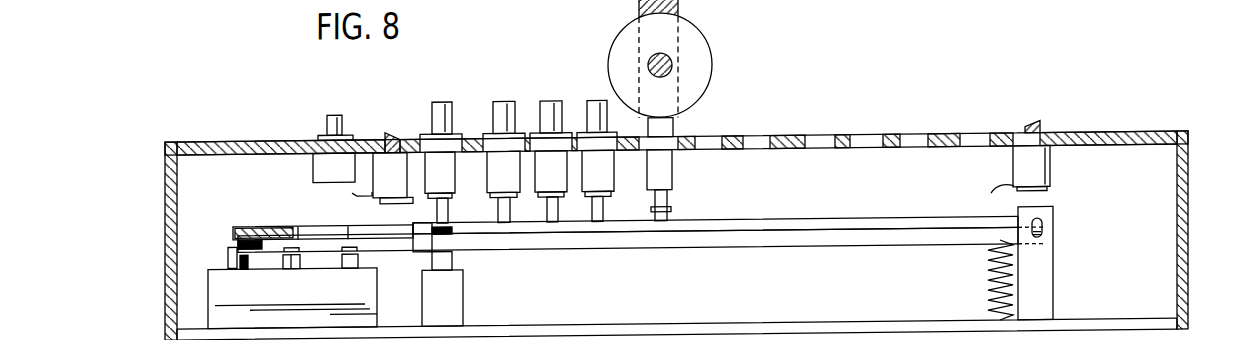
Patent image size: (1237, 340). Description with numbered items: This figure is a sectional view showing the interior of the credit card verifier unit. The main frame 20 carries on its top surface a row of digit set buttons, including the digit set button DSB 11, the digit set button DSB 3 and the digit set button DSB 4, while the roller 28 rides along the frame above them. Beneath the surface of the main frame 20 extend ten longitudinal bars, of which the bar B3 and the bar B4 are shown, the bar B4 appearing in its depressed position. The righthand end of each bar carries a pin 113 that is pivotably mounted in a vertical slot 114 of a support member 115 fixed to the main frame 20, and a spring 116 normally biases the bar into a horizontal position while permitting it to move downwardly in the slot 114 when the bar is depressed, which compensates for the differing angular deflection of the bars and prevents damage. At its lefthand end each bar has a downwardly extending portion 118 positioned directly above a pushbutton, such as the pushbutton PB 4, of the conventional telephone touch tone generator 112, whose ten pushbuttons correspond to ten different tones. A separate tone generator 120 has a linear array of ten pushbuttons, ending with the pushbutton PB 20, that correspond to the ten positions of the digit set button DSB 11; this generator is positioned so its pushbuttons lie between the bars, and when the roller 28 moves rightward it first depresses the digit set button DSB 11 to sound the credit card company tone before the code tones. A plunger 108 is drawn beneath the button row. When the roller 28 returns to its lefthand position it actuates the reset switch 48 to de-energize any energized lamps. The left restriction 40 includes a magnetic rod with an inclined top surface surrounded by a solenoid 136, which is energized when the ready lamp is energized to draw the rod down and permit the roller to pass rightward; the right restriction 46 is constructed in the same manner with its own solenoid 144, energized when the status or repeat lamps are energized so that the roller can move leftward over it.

The main frame 20 is at (219, 149).
The reset switch 48 is at (322, 145).
The left restriction 40 is at (386, 141).
The solenoid 136 is at (385, 199).
The digit set button DSB 11 is at (441, 105).
The digit set button DSB 3 is at (594, 106).
The digit set button DSB 4 is at (674, 172).
The roller 28 is at (711, 63).
The plunger 108 is at (668, 201).
The bar B3 is at (847, 228).
The bar B4 is at (712, 255).
The downwardly extending portion 118 is at (229, 254).
The pushbutton PB 4 is at (229, 270).
The telephone touch tone generator 112 is at (293, 298).
The pushbutton PB 20 is at (455, 263).
The tone generator 120 is at (463, 303).
The spring 116 is at (990, 289).
The support member 115 is at (1045, 295).
The pin 113 is at (1042, 235).
The vertical slot 114 is at (1042, 252).
The solenoid 144 is at (1050, 172).
The right restriction 46 is at (1040, 132).